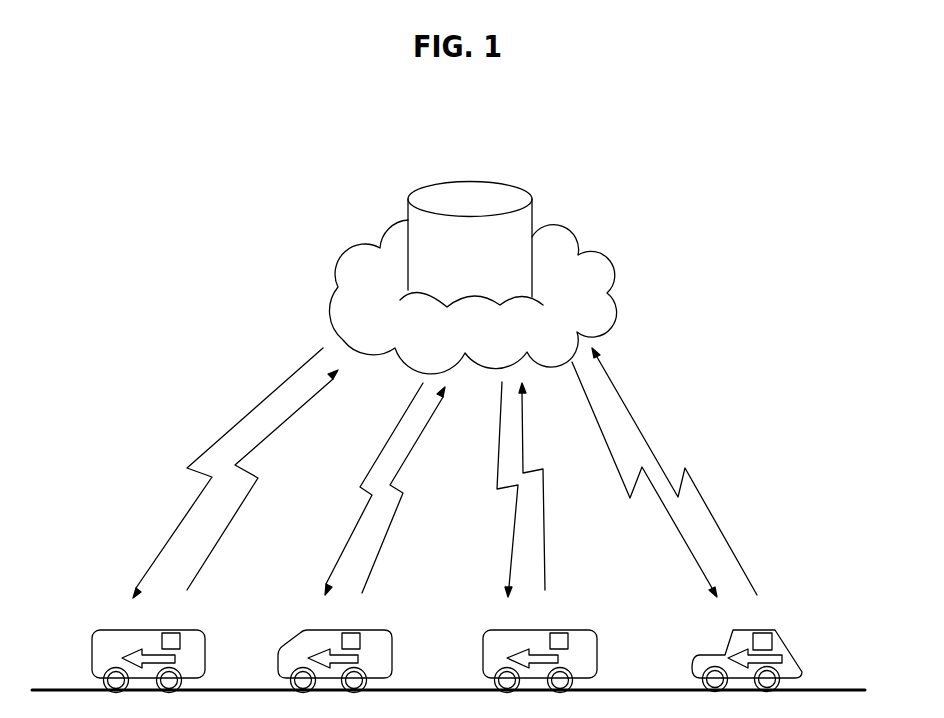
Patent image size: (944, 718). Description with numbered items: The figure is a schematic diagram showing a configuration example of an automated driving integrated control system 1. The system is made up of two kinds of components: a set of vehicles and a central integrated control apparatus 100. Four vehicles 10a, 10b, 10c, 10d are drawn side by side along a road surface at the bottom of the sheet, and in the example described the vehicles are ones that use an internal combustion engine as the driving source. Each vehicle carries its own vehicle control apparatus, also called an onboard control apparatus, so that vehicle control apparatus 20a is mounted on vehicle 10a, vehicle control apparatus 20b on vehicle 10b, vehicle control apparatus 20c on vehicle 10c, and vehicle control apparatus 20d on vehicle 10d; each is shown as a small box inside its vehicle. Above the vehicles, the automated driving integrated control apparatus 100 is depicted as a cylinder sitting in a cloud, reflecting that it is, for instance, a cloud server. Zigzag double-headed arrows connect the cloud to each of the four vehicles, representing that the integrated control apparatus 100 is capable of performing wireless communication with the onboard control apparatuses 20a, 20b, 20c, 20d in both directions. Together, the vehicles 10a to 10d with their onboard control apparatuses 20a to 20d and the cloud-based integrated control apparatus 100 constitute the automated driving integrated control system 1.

The automated driving integrated control system 1 is at (755, 255).
The automated driving integrated control apparatus 100 is at (520, 196).
The vehicle 10a is at (198, 643).
The vehicle 10b is at (385, 643).
The vehicle 10c is at (590, 643).
The vehicle 10d is at (778, 643).
The vehicle control apparatus 20a is at (167, 633).
The vehicle control apparatus 20b is at (349, 633).
The vehicle control apparatus 20c is at (557, 633).
The vehicle control apparatus 20d is at (761, 633).